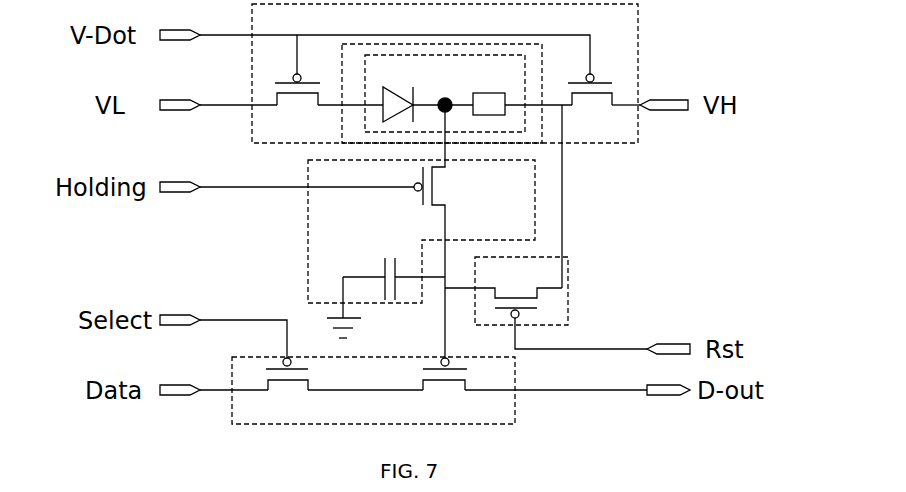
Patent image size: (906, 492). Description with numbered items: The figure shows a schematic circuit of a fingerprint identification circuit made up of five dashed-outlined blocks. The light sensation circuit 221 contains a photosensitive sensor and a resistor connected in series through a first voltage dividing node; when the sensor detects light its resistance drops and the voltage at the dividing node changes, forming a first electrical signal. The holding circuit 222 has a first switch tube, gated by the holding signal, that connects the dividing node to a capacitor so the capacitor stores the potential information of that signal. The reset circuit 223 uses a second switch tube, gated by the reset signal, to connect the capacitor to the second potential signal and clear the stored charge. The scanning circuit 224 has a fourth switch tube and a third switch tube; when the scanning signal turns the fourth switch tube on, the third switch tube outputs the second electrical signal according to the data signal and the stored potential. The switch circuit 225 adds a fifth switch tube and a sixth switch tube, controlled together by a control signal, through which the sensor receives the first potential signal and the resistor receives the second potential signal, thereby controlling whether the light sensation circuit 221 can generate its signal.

The light sensation circuit 221 is at (525, 132).
The holding circuit 222 is at (308, 212).
The reset circuit 223 is at (568, 265).
The scanning circuit 224 is at (515, 360).
The switch circuit 225 is at (638, 27).